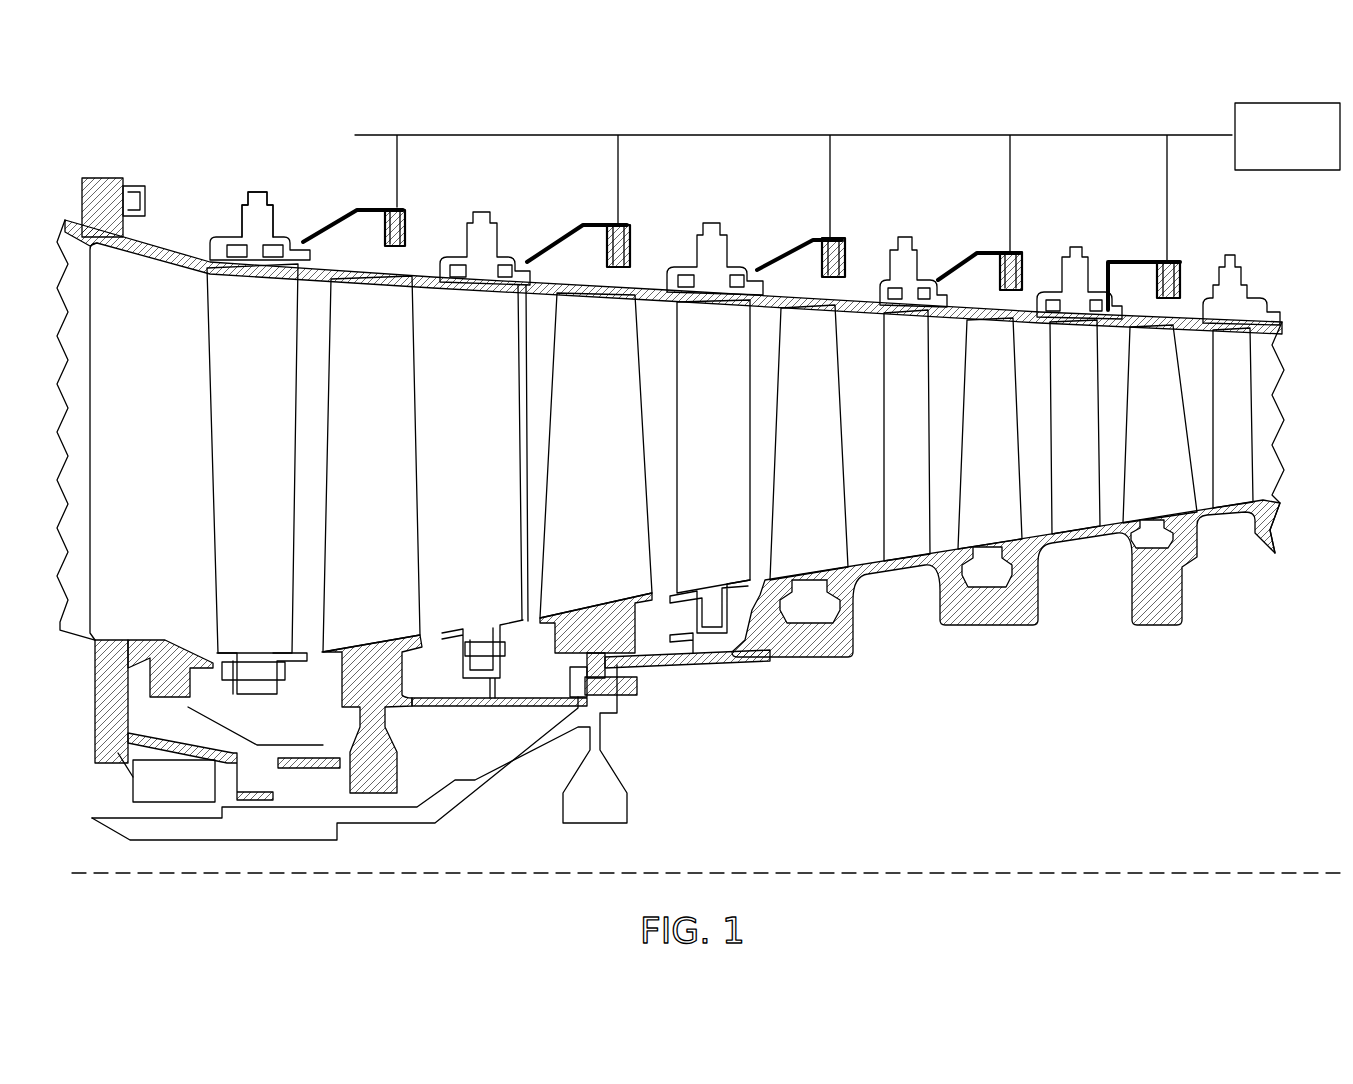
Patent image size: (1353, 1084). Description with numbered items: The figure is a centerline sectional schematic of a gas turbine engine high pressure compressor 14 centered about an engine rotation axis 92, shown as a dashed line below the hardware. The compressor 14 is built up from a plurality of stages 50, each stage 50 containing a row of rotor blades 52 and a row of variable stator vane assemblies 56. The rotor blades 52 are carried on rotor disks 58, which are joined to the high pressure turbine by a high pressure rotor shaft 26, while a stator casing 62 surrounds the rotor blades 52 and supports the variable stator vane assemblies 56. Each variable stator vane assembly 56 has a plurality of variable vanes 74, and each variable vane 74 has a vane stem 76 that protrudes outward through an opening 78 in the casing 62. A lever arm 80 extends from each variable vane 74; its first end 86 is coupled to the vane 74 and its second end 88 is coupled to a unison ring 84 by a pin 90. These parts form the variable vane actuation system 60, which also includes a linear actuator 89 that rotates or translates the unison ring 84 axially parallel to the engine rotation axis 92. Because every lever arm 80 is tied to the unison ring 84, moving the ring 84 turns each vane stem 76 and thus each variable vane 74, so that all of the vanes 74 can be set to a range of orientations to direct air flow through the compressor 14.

The high pressure compressor 14 is at (235, 893).
The high pressure rotor shaft 26 is at (668, 668).
The stage 50 is at (330, 133).
The rotor blade 52 is at (385, 463).
The variable stator vane assembly 56 is at (238, 183).
The rotor disk 58 is at (400, 773).
The variable vane actuation system 60 is at (1251, 105).
The stator casing 62 is at (415, 262).
The variable vane 74 is at (262, 463).
The vane stem 76 is at (497, 257).
The opening 78 is at (262, 238).
The lever arm 80 is at (365, 208).
The unison ring 84 is at (630, 240).
The first end 86 is at (740, 268).
The second end 88 is at (835, 255).
The linear actuator 89 is at (1290, 103).
The pin 90 is at (845, 268).
The engine rotation axis 92 is at (1040, 870).